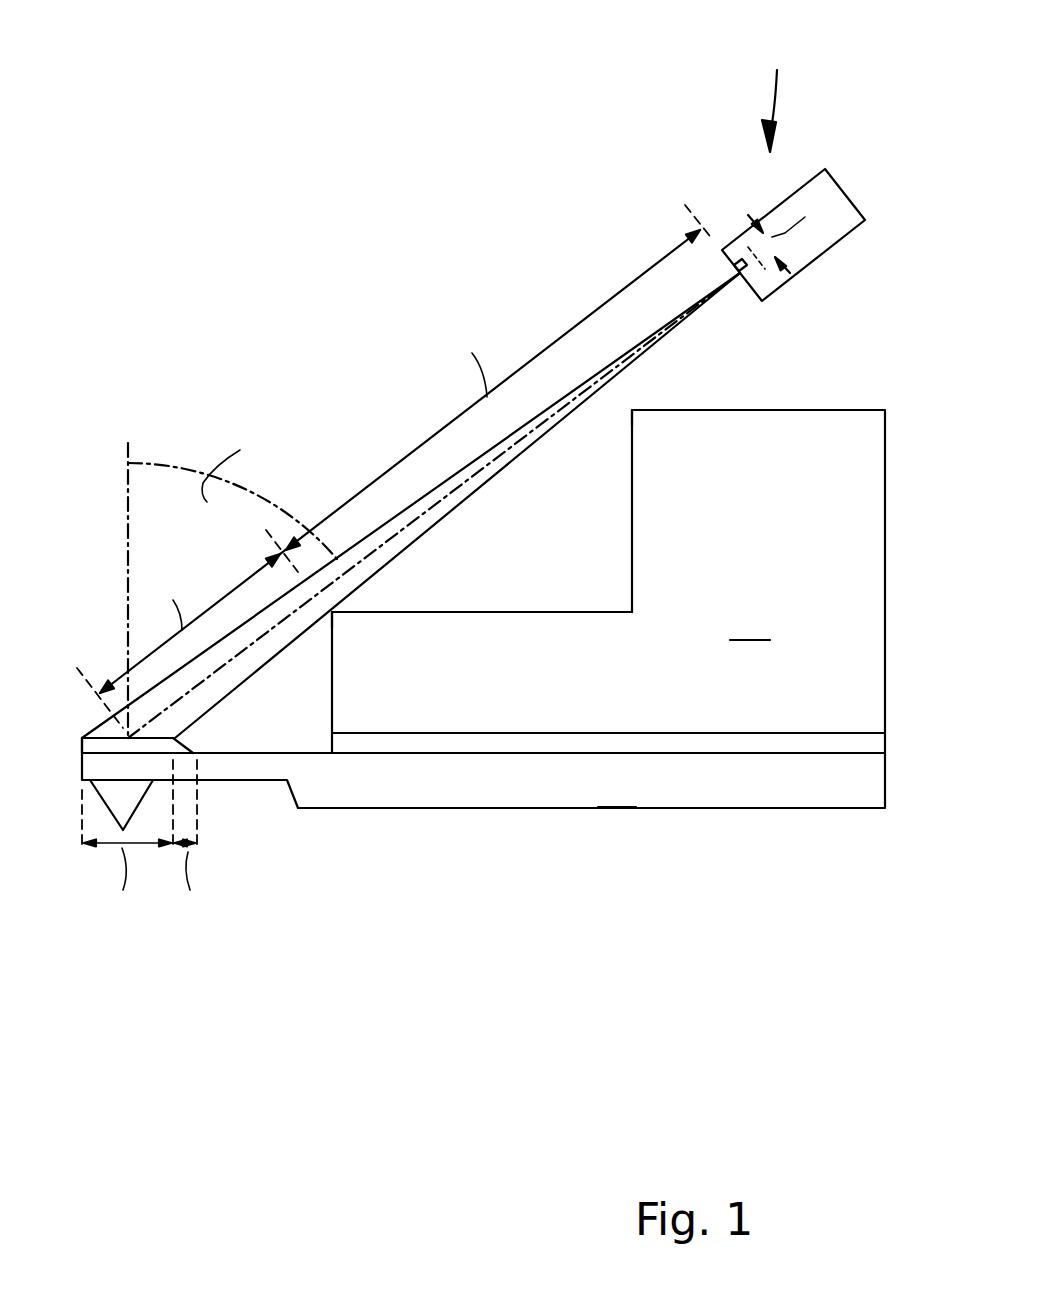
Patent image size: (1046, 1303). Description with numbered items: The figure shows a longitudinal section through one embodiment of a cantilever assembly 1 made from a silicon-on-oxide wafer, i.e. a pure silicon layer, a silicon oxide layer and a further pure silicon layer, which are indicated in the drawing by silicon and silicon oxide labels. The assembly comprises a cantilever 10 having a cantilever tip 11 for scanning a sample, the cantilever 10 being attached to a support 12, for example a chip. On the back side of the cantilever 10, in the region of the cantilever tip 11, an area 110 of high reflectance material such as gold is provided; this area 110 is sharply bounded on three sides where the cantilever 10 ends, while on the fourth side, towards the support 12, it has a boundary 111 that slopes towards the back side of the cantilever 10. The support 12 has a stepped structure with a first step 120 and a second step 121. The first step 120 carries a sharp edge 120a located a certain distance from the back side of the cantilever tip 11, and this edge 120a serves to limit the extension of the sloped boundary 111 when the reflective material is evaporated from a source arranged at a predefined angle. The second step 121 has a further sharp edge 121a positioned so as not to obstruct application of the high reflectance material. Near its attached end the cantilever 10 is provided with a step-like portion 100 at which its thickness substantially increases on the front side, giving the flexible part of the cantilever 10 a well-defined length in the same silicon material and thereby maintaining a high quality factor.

The cantilever assembly 1 is at (780, 925).
The cantilever 10 is at (330, 856).
The step-like portion 100 is at (290, 800).
The cantilever tip 11 is at (117, 802).
The area of high reflectance material 110 is at (90, 747).
The boundary 111 is at (177, 752).
The support 12 is at (652, 623).
The first step 120 is at (413, 612).
The sharp edge 120a is at (333, 614).
The second step 121 is at (758, 408).
The further sharp edge 121a is at (632, 410).